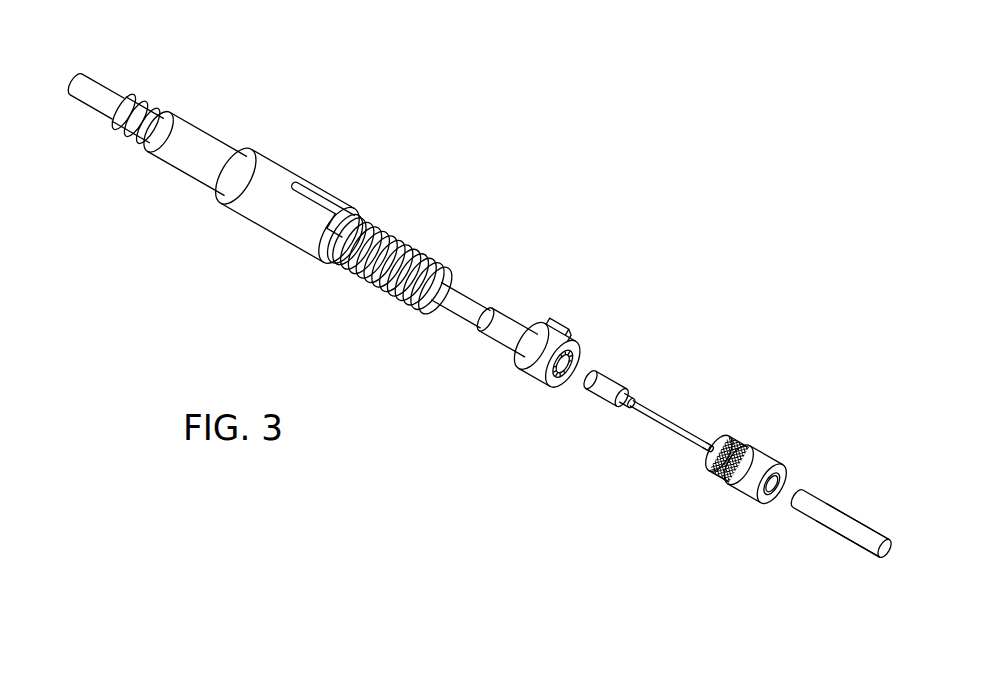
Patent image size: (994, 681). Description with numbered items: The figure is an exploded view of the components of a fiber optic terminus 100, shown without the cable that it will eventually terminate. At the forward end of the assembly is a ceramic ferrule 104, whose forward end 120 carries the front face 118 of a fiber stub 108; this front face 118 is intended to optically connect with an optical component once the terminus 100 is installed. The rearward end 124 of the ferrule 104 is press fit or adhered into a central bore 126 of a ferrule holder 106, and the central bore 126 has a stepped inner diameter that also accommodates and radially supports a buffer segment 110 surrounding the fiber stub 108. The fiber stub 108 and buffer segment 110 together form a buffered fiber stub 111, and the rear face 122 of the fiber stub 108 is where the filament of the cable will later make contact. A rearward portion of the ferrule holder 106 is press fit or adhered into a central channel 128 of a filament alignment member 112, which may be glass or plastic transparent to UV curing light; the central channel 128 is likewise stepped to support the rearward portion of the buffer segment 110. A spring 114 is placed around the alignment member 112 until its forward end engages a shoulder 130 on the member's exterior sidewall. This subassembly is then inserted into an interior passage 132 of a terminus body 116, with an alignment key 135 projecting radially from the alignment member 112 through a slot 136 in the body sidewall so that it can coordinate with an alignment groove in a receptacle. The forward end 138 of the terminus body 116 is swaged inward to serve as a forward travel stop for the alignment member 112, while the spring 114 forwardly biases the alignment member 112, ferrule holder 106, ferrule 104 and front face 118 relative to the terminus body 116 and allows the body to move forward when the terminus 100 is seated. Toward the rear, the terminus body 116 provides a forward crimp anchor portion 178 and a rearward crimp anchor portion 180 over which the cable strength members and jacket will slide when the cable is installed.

The terminus 100 is at (559, 175).
The ferrule 104 is at (853, 533).
The ferrule holder 106 is at (765, 462).
The fiber stub 108 is at (665, 422).
The buffer segment 110 is at (604, 388).
The buffered fiber stub 111 is at (666, 369).
The filament alignment member 112 is at (496, 317).
The spring 114 is at (387, 283).
The terminus body 116 is at (255, 157).
The front face 118 is at (708, 445).
The forward end 120 is at (862, 548).
The rear face 122 is at (567, 367).
The rearward end 124 is at (795, 505).
The central bore 126 is at (773, 482).
The central channel 128 is at (563, 355).
The shoulder 130 is at (522, 346).
The interior passage 132 is at (337, 233).
The alignment key 135 is at (553, 328).
The slot 136 is at (309, 195).
The forward end 138 is at (323, 248).
The forward crimp anchor portion 178 is at (145, 113).
The rearward crimp anchor portion 180 is at (98, 93).